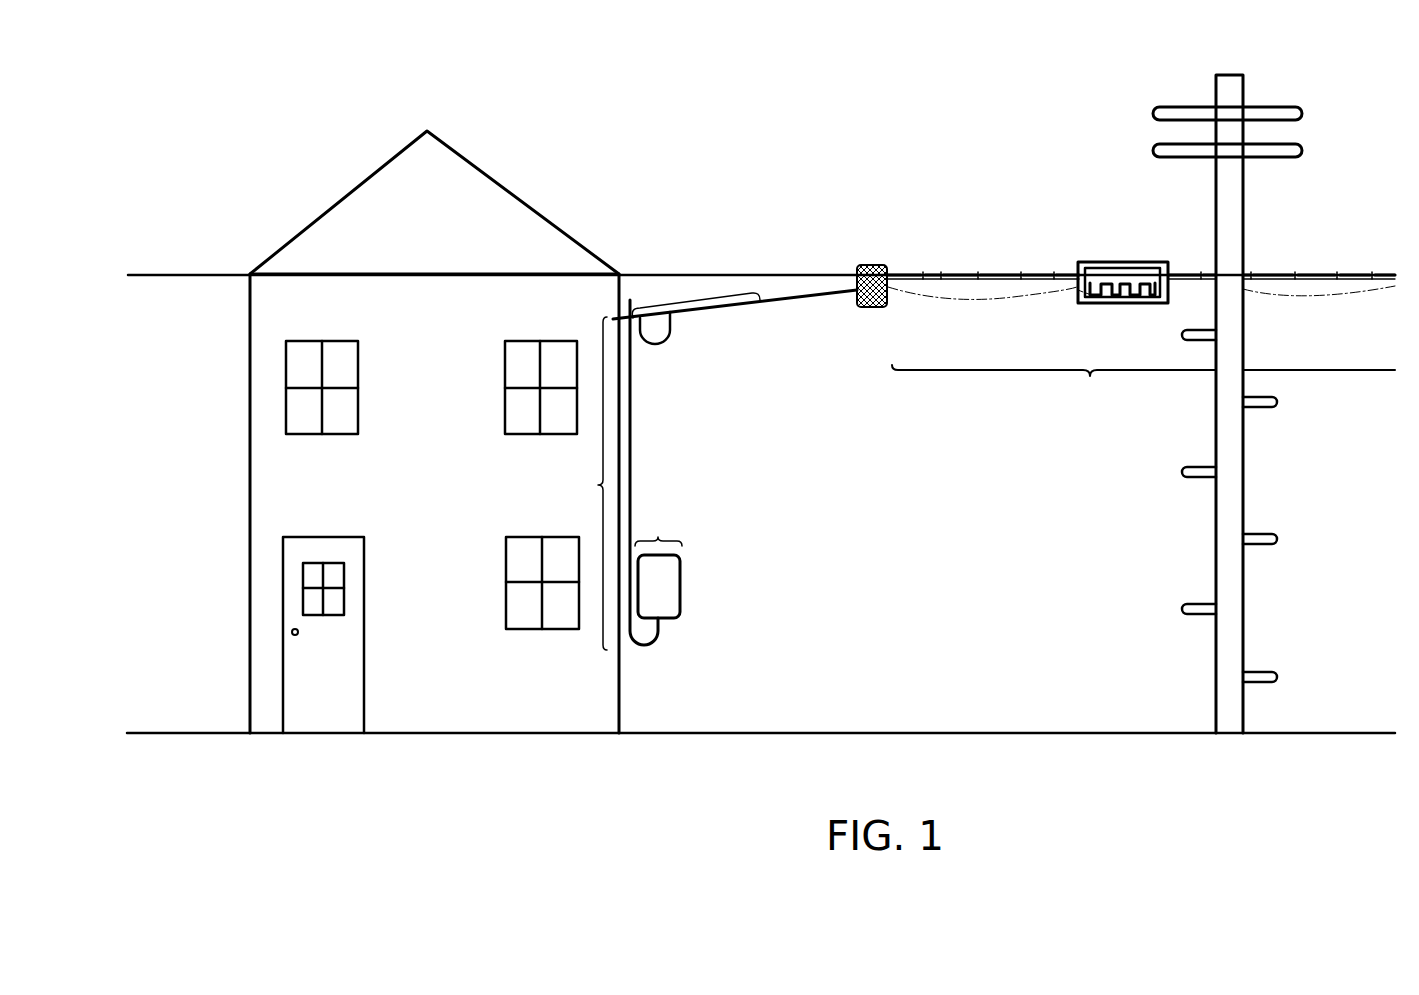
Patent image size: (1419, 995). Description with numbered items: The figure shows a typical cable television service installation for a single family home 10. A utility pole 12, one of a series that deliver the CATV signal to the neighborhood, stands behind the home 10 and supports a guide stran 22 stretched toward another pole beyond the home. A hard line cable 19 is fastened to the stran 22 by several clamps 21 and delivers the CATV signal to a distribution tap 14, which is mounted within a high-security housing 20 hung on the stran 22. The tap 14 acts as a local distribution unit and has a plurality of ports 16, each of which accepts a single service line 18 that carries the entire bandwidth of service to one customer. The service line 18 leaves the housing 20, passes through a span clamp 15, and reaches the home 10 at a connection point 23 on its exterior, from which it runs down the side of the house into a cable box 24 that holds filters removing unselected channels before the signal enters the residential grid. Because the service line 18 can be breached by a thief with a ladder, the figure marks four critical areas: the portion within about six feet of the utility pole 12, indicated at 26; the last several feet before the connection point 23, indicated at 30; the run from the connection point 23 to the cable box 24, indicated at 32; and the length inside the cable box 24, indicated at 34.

The single family home 10 is at (354, 154).
The utility pole 12 is at (1175, 80).
The distribution tap 14 is at (1085, 242).
The span clamp 15 is at (863, 265).
The ports 16 is at (1153, 285).
The service line 18 is at (1005, 302).
The hard line cable 19 is at (920, 272).
The high-security housing 20 is at (1093, 303).
The clamps 21 is at (1053, 272).
The guide stran 22 is at (767, 262).
The connection point 23 is at (636, 338).
The cable box 24 is at (682, 583).
The critical area near utility pole 26 is at (1143, 387).
The critical area before connection point 30 is at (693, 298).
The critical area from connection point to cable box 32 is at (613, 475).
The critical area in cable box 34 is at (658, 527).